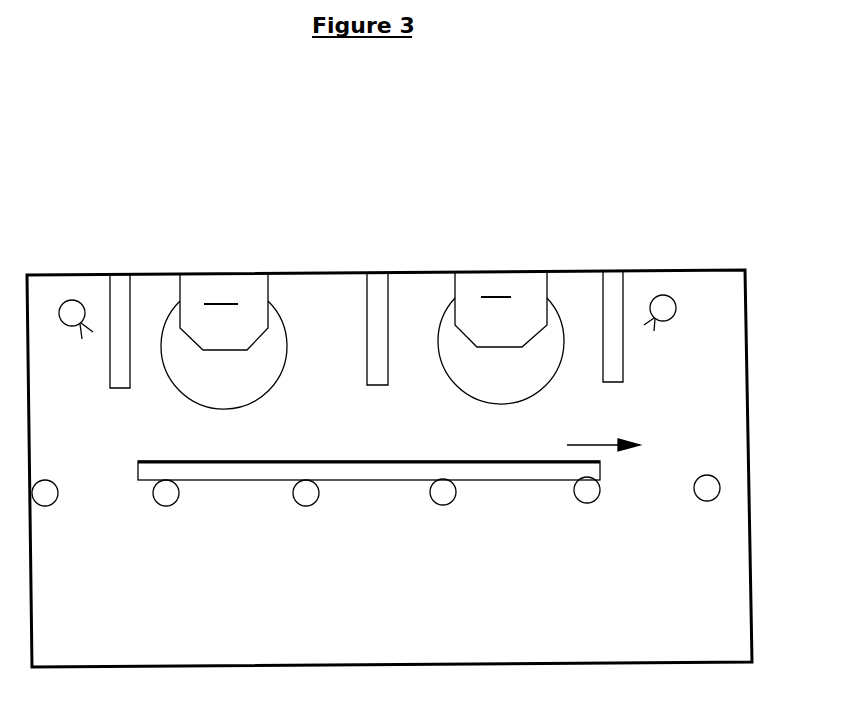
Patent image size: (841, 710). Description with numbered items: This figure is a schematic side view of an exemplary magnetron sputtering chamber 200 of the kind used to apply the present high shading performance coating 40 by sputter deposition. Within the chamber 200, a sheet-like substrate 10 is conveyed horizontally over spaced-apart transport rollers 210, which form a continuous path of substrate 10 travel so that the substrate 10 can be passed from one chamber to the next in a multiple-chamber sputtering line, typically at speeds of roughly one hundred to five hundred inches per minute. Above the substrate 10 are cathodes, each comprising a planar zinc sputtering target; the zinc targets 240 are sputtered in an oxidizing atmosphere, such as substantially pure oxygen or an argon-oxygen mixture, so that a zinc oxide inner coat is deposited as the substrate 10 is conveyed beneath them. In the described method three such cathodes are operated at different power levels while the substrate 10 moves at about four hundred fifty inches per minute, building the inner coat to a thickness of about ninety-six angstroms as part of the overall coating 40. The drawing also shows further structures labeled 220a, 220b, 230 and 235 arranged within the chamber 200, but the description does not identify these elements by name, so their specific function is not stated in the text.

The magnetron sputtering chamber 200 is at (708, 262).
The partition wall 230 is at (110, 293).
The sensor 235 is at (80, 303).
The first deposition source 220a is at (180, 322).
The second deposition source 220b is at (455, 322).
The zinc target 240 is at (357, 293).
The substrate 10 is at (358, 473).
The high shading performance coating 40 is at (482, 462).
The transport rollers 210 is at (49, 505).